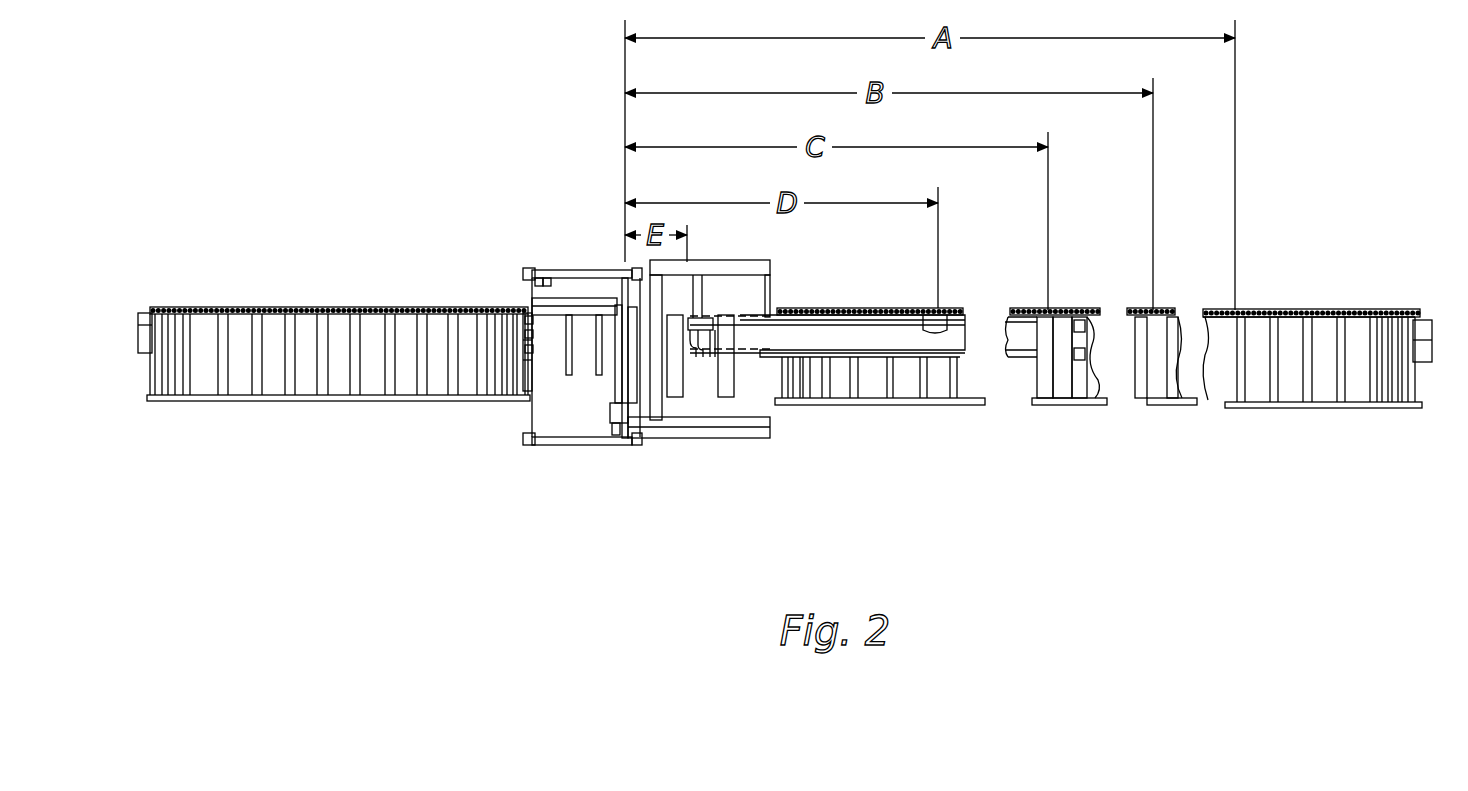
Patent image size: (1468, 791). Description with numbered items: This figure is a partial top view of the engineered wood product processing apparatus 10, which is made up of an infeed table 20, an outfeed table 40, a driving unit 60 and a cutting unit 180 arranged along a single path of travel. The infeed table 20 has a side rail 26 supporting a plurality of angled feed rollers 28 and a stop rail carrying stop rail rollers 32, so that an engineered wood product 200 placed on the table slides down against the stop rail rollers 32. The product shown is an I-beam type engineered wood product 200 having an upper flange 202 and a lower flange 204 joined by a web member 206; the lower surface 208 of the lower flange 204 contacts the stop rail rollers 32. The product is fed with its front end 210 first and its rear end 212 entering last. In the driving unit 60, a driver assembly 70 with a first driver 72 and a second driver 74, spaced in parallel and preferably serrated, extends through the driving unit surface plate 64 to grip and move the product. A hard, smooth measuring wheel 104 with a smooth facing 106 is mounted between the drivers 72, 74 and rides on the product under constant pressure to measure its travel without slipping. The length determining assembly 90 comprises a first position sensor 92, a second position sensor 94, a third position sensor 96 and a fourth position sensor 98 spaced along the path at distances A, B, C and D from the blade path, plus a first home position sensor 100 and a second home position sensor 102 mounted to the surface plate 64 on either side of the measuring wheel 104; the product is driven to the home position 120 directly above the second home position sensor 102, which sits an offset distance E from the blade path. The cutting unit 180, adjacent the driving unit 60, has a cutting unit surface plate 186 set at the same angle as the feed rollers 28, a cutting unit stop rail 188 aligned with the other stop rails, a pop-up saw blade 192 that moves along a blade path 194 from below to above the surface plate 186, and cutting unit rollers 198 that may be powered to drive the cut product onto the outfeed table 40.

The engineered wood product processing apparatus 10 is at (447, 135).
The infeed table 20 is at (1238, 445).
The side rail 26 is at (1325, 405).
The feed rollers 28 is at (1358, 322).
The stop rail rollers 32 is at (1305, 313).
The outfeed table 40 is at (178, 408).
The driving unit 60 is at (705, 518).
The driving unit surface plate 64 is at (740, 440).
The driver assembly 70 is at (722, 253).
The first driver 72 is at (728, 410).
The second driver 74 is at (673, 350).
The length determining assembly 90 is at (815, 250).
The first position sensor 92 is at (1237, 318).
The second position sensor 94 is at (1153, 315).
The third position sensor 96 is at (1050, 315).
The fourth position sensor 98 is at (942, 313).
The first home position sensor 100 is at (710, 360).
The second home position sensor 102 is at (692, 357).
The measuring wheel 104 is at (702, 318).
The smooth facing 106 is at (702, 318).
The home position 120 is at (728, 387).
The cutting unit 180 is at (582, 505).
The cutting unit surface plate 186 is at (548, 398).
The cutting unit stop rail 188 is at (578, 300).
The saw blade 192 is at (620, 372).
The blade path 194 is at (605, 312).
The cutting unit rollers 198 is at (563, 332).
The engineered wood product 200 is at (873, 343).
The upper flange 202 is at (903, 353).
The lower flange 204 is at (845, 318).
The web member 206 is at (842, 340).
The lower surface 208 is at (792, 312).
The front end 210 is at (675, 360).
The rear end 212 is at (1038, 333).